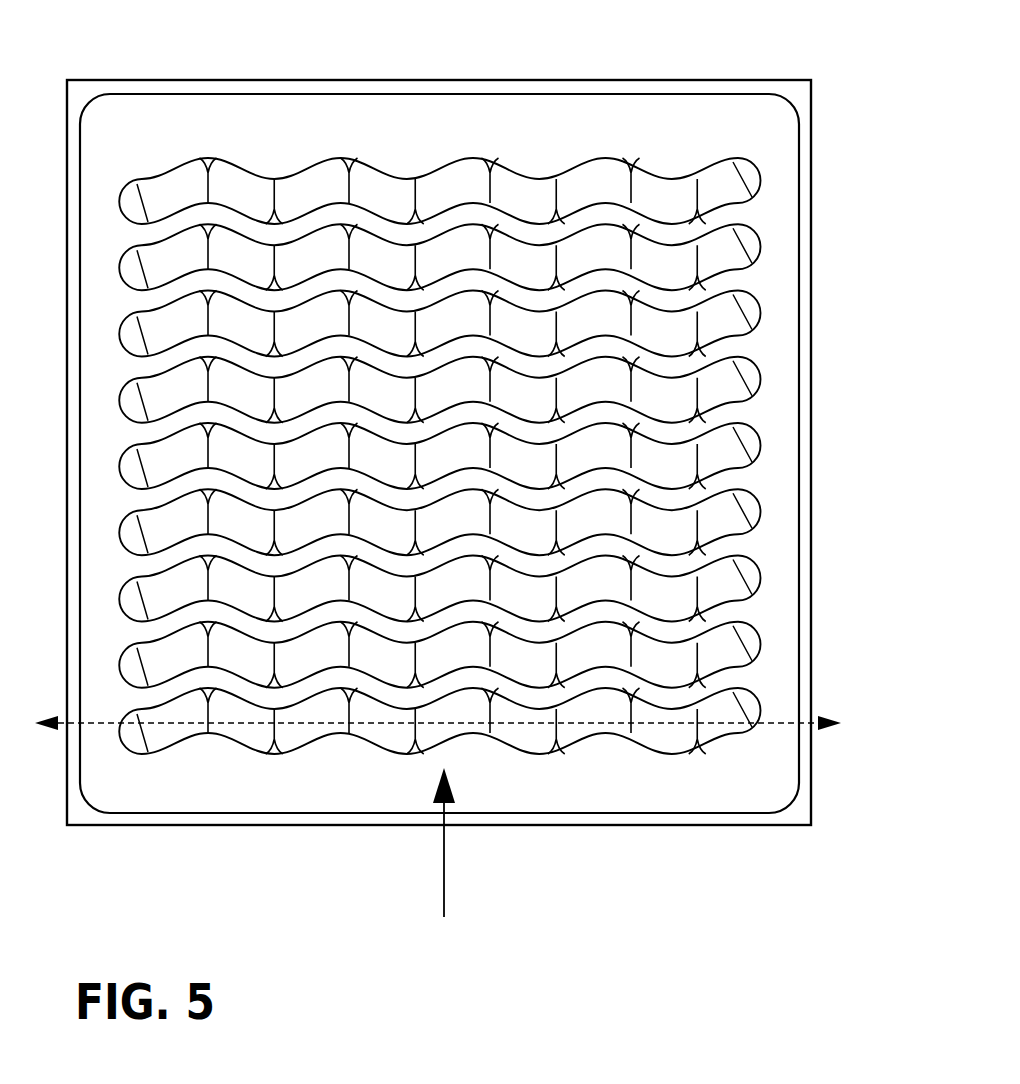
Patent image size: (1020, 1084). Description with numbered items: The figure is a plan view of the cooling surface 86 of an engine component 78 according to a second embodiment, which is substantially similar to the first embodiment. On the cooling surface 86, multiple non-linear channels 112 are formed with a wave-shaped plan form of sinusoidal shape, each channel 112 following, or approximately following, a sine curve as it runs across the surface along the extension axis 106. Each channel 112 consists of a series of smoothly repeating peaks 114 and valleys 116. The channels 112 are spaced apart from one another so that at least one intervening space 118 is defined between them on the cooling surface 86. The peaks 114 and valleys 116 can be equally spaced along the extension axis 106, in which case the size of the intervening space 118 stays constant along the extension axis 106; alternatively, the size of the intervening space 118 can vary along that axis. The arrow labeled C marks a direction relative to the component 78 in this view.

The engine component 78 is at (231, 66).
The cooling surface 86 is at (689, 143).
The non-linear channels 112 is at (758, 495).
The peaks 114 is at (340, 226).
The valleys 116 is at (411, 268).
The intervening space 118 is at (708, 357).
The extension axis 106 is at (464, 723).
The direction C is at (444, 857).